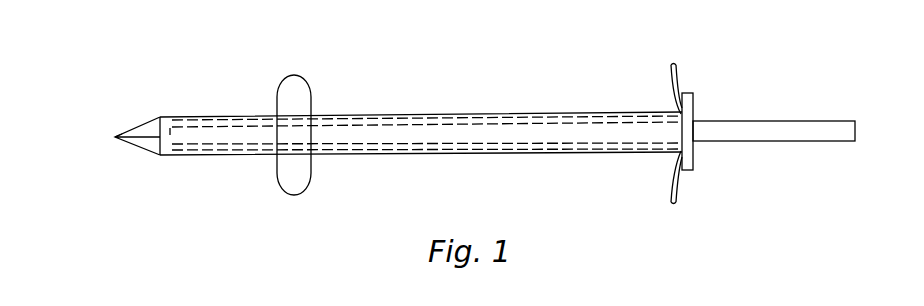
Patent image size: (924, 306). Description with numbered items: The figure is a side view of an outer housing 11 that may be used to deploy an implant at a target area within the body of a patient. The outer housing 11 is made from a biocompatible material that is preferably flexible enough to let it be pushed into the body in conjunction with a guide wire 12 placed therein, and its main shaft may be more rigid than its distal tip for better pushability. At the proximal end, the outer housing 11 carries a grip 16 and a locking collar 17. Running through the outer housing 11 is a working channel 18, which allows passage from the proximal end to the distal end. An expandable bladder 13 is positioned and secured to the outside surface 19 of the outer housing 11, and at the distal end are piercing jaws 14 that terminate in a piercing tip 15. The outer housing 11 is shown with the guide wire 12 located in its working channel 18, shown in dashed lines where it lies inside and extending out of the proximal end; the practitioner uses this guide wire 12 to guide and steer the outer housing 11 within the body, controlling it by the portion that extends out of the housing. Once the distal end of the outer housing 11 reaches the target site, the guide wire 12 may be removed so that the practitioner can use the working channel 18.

The outer housing 11 is at (469, 84).
The guide wire 12 is at (345, 135).
The expandable bladder 13 is at (290, 90).
The piercing jaws 14 is at (146, 143).
The piercing tip 15 is at (114, 139).
The grip 16 is at (680, 68).
The locking collar 17 is at (693, 163).
The working channel 18 is at (513, 145).
The outside surface 19 is at (582, 152).